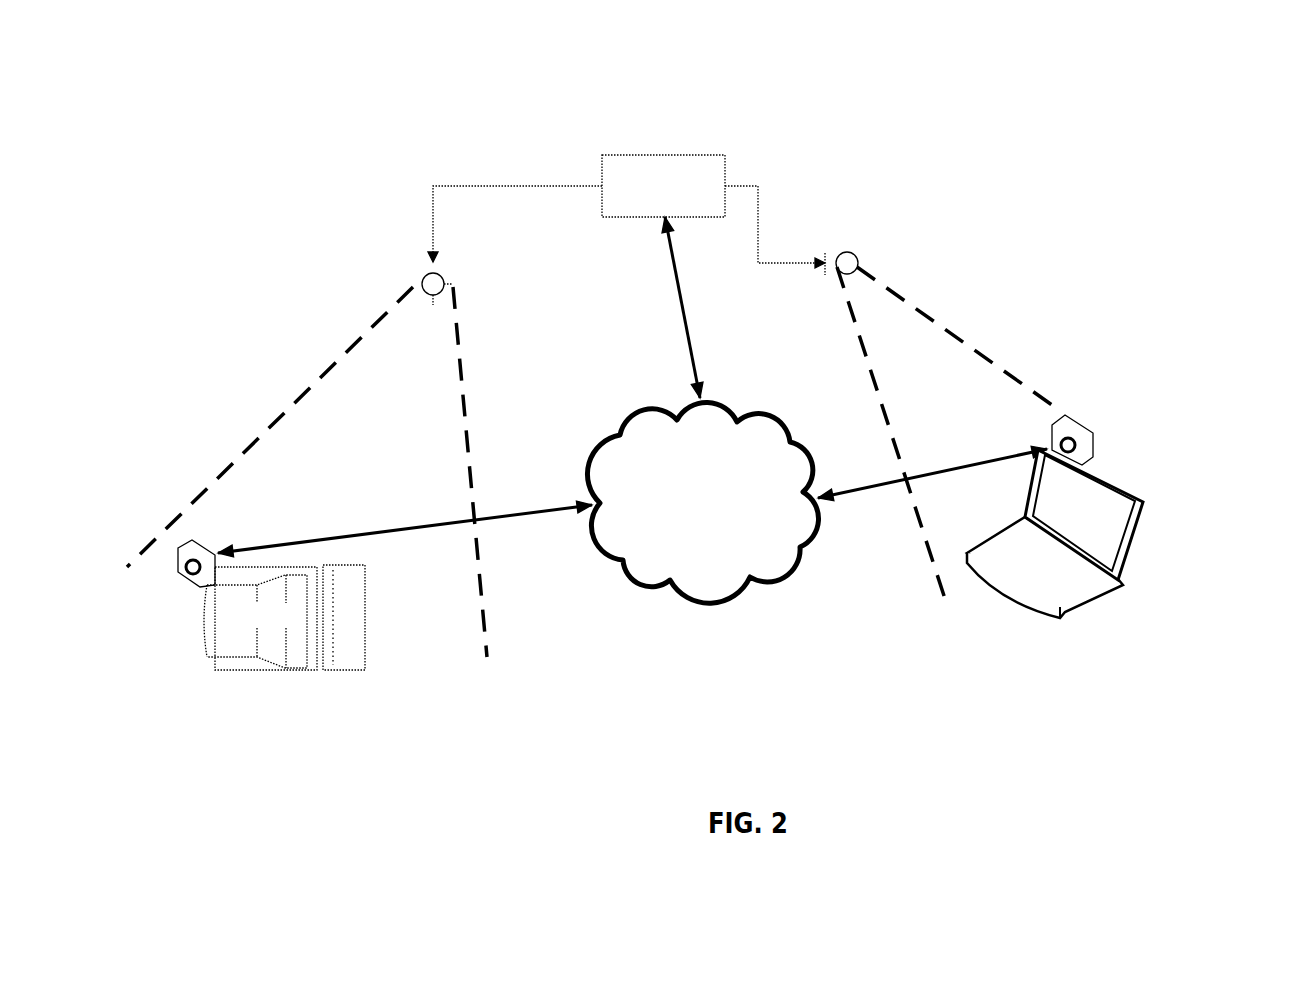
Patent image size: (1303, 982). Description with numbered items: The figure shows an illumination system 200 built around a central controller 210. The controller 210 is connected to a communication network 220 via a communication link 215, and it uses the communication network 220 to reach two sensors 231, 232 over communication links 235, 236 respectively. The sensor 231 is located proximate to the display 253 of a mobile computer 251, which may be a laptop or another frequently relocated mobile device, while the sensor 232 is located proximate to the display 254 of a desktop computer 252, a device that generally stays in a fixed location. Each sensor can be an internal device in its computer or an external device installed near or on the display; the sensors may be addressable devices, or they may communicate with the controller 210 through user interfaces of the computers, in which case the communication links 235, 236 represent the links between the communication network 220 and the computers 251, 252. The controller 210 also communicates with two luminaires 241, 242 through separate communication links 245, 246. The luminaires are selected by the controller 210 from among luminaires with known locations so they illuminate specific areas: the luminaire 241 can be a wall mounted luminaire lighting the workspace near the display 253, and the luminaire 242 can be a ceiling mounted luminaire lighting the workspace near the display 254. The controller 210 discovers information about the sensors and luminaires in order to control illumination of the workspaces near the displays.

The illumination system 200 is at (588, 683).
The controller 210 is at (645, 210).
The communication link 215 is at (693, 367).
The communication network 220 is at (682, 541).
The sensor 231 is at (1087, 432).
The sensor 232 is at (210, 548).
The communication link 235 is at (840, 493).
The communication link 236 is at (522, 508).
The luminaire 241 is at (851, 262).
The luminaire 242 is at (443, 273).
The communication link 245 is at (762, 193).
The communication link 246 is at (458, 183).
The mobile computer 251 is at (1093, 595).
The desktop computer 252 is at (245, 678).
The display 253 is at (1133, 533).
The display 254 is at (255, 621).